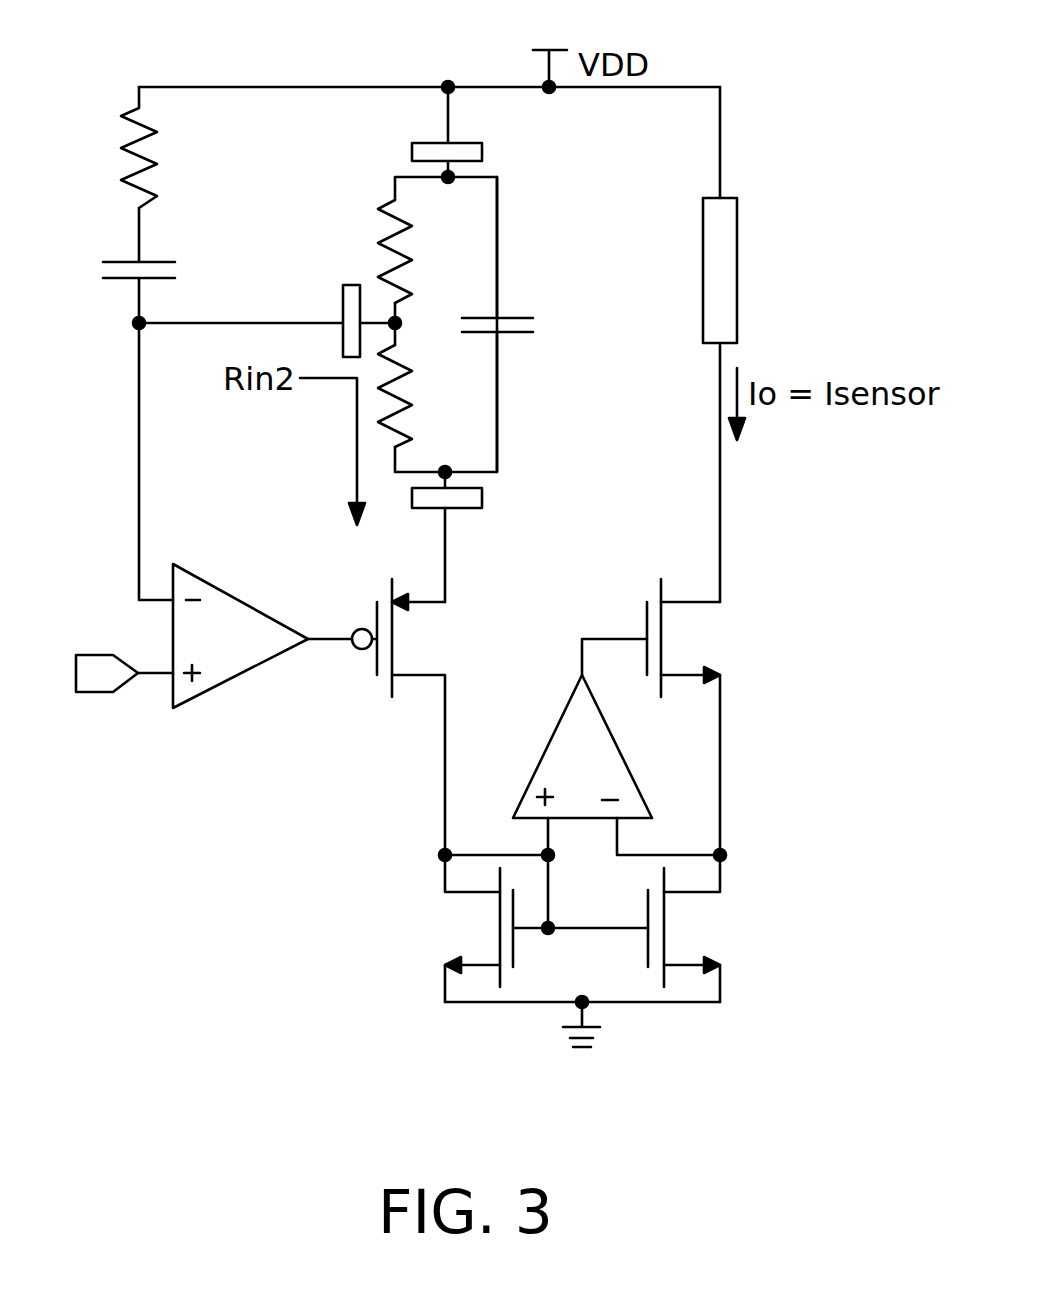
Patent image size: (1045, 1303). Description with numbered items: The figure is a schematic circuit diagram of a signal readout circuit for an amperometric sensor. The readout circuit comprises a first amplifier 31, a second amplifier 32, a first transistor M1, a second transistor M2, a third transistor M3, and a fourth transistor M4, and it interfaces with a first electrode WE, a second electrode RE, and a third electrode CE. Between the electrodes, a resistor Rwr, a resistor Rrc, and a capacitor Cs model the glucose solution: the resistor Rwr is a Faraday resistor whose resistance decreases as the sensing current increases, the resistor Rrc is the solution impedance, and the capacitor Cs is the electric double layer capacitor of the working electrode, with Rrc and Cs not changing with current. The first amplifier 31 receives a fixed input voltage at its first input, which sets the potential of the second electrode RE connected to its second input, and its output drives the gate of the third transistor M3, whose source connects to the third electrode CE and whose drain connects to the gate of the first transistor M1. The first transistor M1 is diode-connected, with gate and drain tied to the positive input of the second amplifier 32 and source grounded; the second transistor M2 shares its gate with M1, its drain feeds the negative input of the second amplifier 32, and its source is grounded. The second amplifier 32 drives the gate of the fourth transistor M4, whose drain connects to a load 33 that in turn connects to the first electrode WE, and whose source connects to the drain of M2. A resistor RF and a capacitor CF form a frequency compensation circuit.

The first amplifier 31 is at (223, 660).
The second amplifier 32 is at (565, 743).
The load 33 is at (735, 318).
The first transistor M1 is at (481, 928).
The second transistor M2 is at (645, 928).
The third transistor M3 is at (409, 717).
The fourth transistor M4 is at (662, 717).
The resistor RF is at (162, 147).
The capacitor CF is at (152, 265).
The second electrode RE is at (267, 321).
The first electrode WE is at (459, 132).
The third electrode CE is at (453, 537).
The resistor Rwr is at (429, 251).
The resistor Rrc is at (426, 396).
The capacitor Cs is at (504, 324).